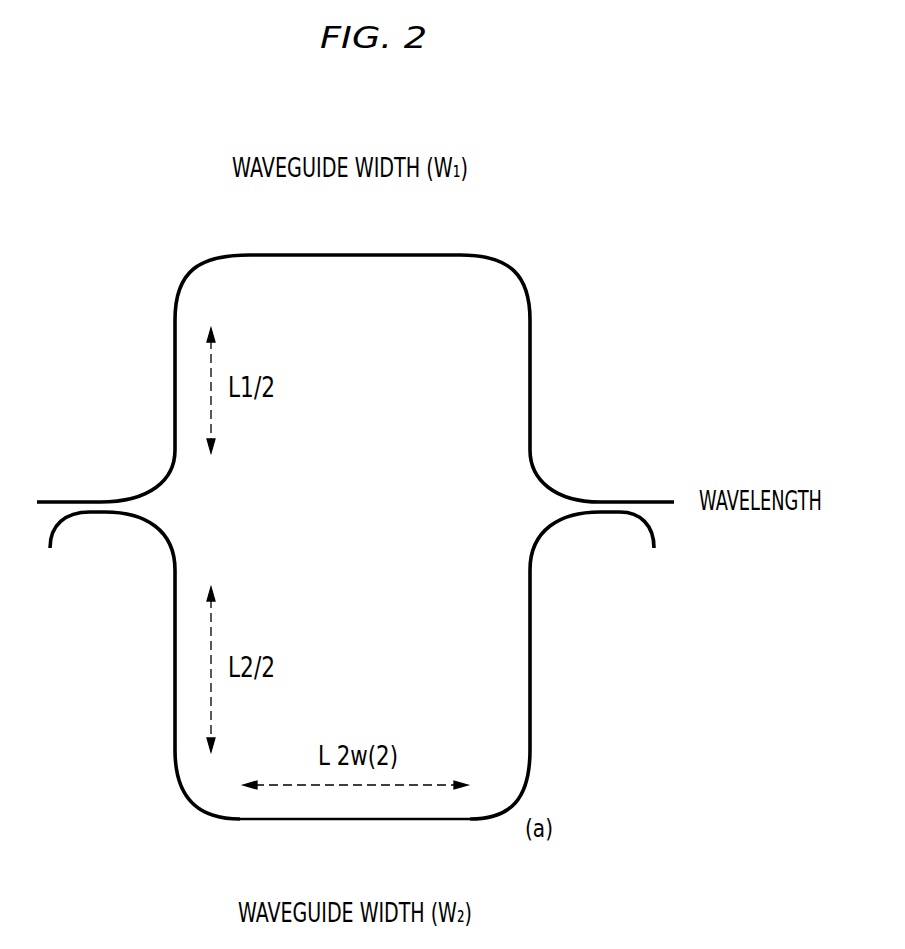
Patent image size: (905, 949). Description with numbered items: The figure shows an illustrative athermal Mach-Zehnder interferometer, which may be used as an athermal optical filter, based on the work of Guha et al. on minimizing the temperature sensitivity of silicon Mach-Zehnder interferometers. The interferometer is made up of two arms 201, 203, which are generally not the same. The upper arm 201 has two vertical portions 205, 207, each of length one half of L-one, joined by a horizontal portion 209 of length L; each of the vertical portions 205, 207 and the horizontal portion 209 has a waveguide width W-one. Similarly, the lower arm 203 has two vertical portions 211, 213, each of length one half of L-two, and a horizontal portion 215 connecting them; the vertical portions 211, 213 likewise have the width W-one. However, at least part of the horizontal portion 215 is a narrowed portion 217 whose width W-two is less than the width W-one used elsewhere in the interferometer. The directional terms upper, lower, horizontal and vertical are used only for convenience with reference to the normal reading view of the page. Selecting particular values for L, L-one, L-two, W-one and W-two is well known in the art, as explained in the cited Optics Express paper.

The arm 201 is at (178, 285).
The arm 203 is at (184, 794).
The vertical portion 205 is at (174, 403).
The vertical portion 207 is at (528, 403).
The horizontal portion 209 is at (360, 253).
The vertical portion 211 is at (173, 672).
The vertical portion 213 is at (533, 672).
The horizontal portion 215 is at (488, 810).
The portion 217 is at (368, 820).